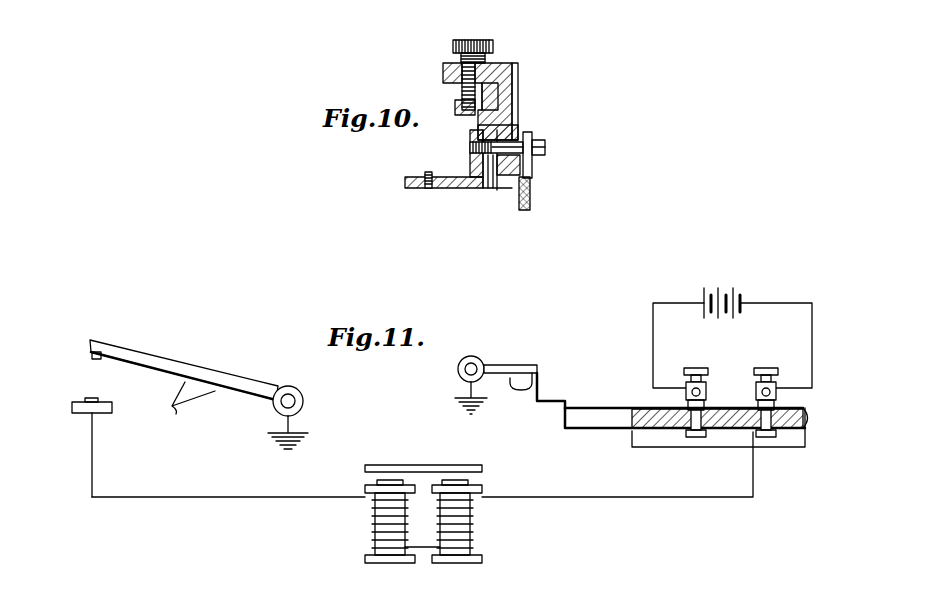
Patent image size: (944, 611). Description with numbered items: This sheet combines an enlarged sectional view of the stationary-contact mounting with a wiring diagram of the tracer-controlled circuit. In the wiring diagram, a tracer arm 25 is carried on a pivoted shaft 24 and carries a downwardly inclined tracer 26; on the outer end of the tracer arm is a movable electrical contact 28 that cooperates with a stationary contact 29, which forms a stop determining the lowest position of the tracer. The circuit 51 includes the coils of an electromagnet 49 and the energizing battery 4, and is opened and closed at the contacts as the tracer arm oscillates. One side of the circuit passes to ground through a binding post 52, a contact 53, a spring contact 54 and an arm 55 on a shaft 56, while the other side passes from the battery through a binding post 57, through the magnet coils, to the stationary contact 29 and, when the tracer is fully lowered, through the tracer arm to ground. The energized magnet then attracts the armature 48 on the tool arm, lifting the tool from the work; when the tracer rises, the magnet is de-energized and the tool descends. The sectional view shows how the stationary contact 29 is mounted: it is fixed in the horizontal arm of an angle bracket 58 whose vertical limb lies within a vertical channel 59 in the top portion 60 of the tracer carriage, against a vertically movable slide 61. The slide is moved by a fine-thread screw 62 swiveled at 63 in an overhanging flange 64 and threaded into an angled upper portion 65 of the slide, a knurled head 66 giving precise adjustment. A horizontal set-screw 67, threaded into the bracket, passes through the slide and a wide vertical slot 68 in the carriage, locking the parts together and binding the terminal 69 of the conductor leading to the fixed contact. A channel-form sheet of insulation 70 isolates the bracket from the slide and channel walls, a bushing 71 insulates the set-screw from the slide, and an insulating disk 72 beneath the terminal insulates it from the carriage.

In FIG. 11, the battery 4 is at (720, 290).
In FIG. 11, the shaft 24 is at (302, 397).
In FIG. 11, the tracer arm 25 is at (172, 364).
In FIG. 11, the tracer 26 is at (174, 409).
In FIG. 11, the movable electrical contact 28 is at (101, 356).
In FIG. 10, the stationary contact 29 is at (430, 175).
In FIG. 11, the stationary contact 29 is at (114, 402).
In FIG. 11, the armature 48 is at (404, 465).
In FIG. 11, the electromagnet 49 is at (410, 563).
In FIG. 11, the circuit 51 is at (270, 498).
In FIG. 11, the binding post 52 is at (706, 385).
In FIG. 11, the contact 53 is at (597, 430).
In FIG. 11, the spring contact 54 is at (585, 407).
In FIG. 11, the arm 55 is at (508, 365).
In FIG. 11, the shaft 56 is at (468, 357).
In FIG. 11, the binding post 57 is at (776, 385).
In FIG. 10, the angle bracket 58 is at (459, 188).
In FIG. 10, the vertical channel 59 is at (500, 98).
In FIG. 10, the top portion 60 is at (518, 72).
In FIG. 10, the slide 61 is at (518, 124).
In FIG. 10, the fine-thread screw 62 is at (462, 95).
In FIG. 10, the swivel 63 is at (498, 72).
In FIG. 10, the overhanging flange 64 is at (445, 68).
In FIG. 10, the angled upper portion 65 is at (460, 110).
In FIG. 10, the knurled head 66 is at (483, 40).
In FIG. 10, the set-screw 67 is at (545, 151).
In FIG. 10, the vertical slot 68 is at (505, 190).
In FIG. 10, the terminal 69 is at (530, 178).
In FIG. 10, the sheet of insulation 70 is at (490, 190).
In FIG. 10, the bushing 71 is at (495, 190).
In FIG. 10, the insulating disk 72 is at (540, 145).